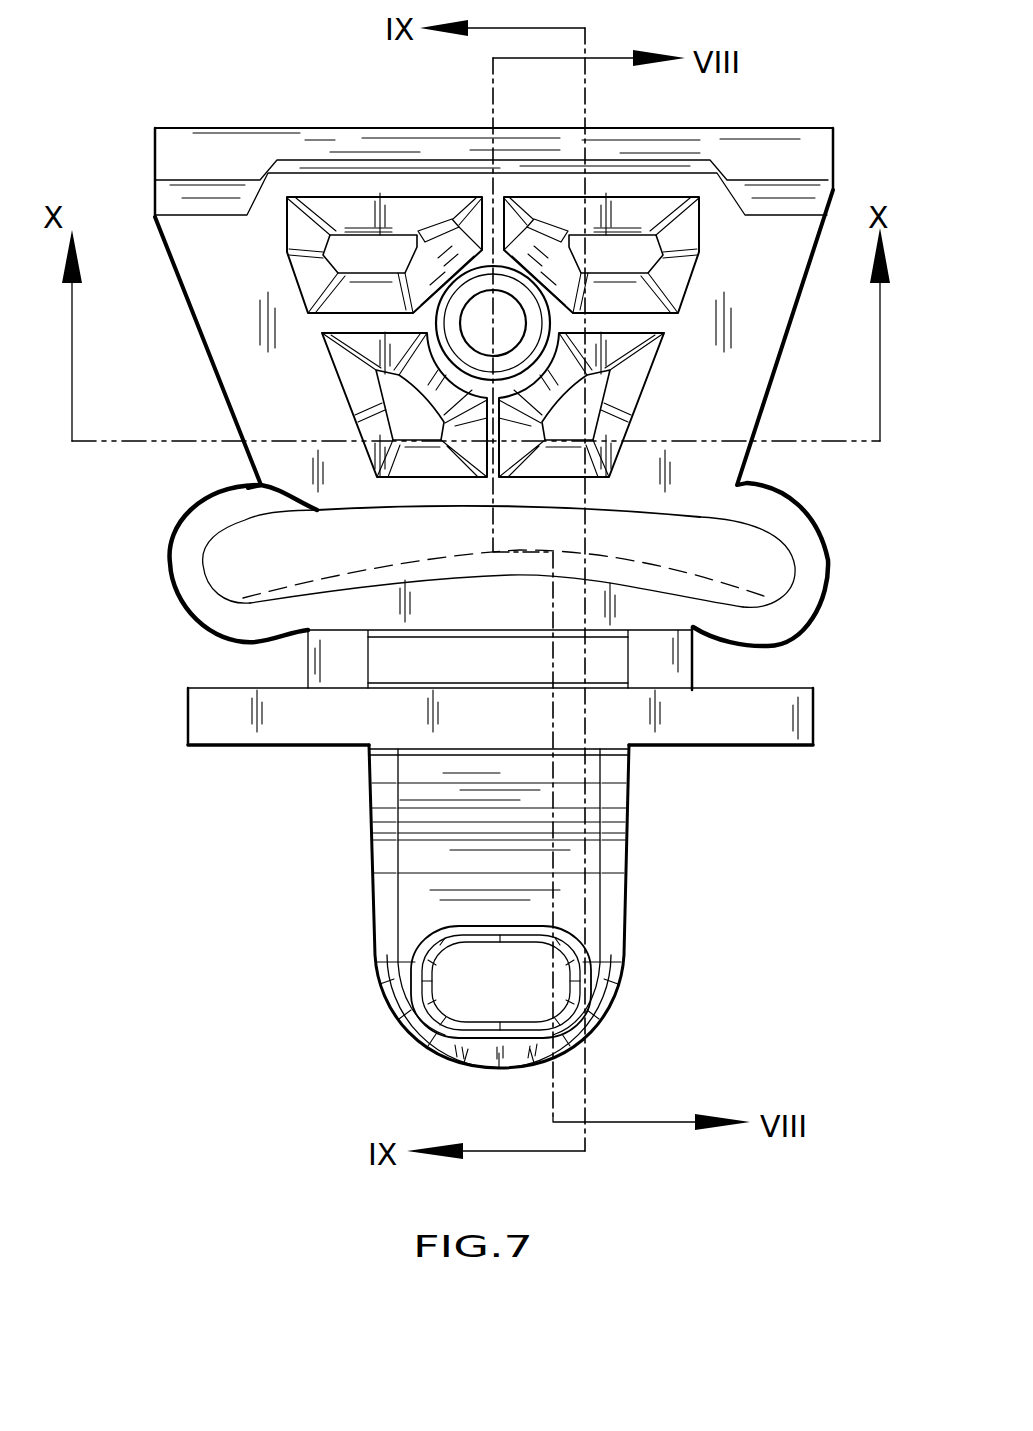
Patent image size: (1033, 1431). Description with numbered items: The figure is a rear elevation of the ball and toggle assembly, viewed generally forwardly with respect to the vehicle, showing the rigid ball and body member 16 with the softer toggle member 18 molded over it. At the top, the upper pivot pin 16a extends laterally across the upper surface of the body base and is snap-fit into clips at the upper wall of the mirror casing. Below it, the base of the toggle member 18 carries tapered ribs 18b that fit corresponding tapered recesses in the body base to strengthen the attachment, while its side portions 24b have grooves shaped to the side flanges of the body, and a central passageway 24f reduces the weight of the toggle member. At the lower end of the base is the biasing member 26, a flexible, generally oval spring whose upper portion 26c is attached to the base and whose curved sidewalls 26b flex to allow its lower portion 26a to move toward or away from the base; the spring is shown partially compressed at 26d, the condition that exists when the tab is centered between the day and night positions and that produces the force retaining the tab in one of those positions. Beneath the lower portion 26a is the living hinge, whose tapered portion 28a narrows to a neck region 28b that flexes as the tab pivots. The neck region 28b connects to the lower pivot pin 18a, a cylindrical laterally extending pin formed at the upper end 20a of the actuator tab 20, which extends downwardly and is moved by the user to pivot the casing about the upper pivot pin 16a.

The ball and body member 16 is at (329, 97).
The upper pivot pin 16a is at (182, 157).
The toggle member 18 is at (747, 415).
The lower pivot pin 18a is at (752, 745).
The tapered ribs 18b is at (355, 210).
The actuator tab 20 is at (607, 922).
The upper end of actuating tab 20a is at (630, 768).
The side portions 24b is at (225, 317).
The central passageway 24f is at (507, 337).
The biasing member 26 is at (148, 534).
The lower portion of biasing member 26a is at (440, 607).
The curved sidewalls 26b is at (185, 565).
The upper portion of biasing member 26c is at (353, 493).
The partially compressed hinge position 26d is at (692, 578).
The tapered portion 28a is at (433, 667).
The neck region 28b is at (610, 665).